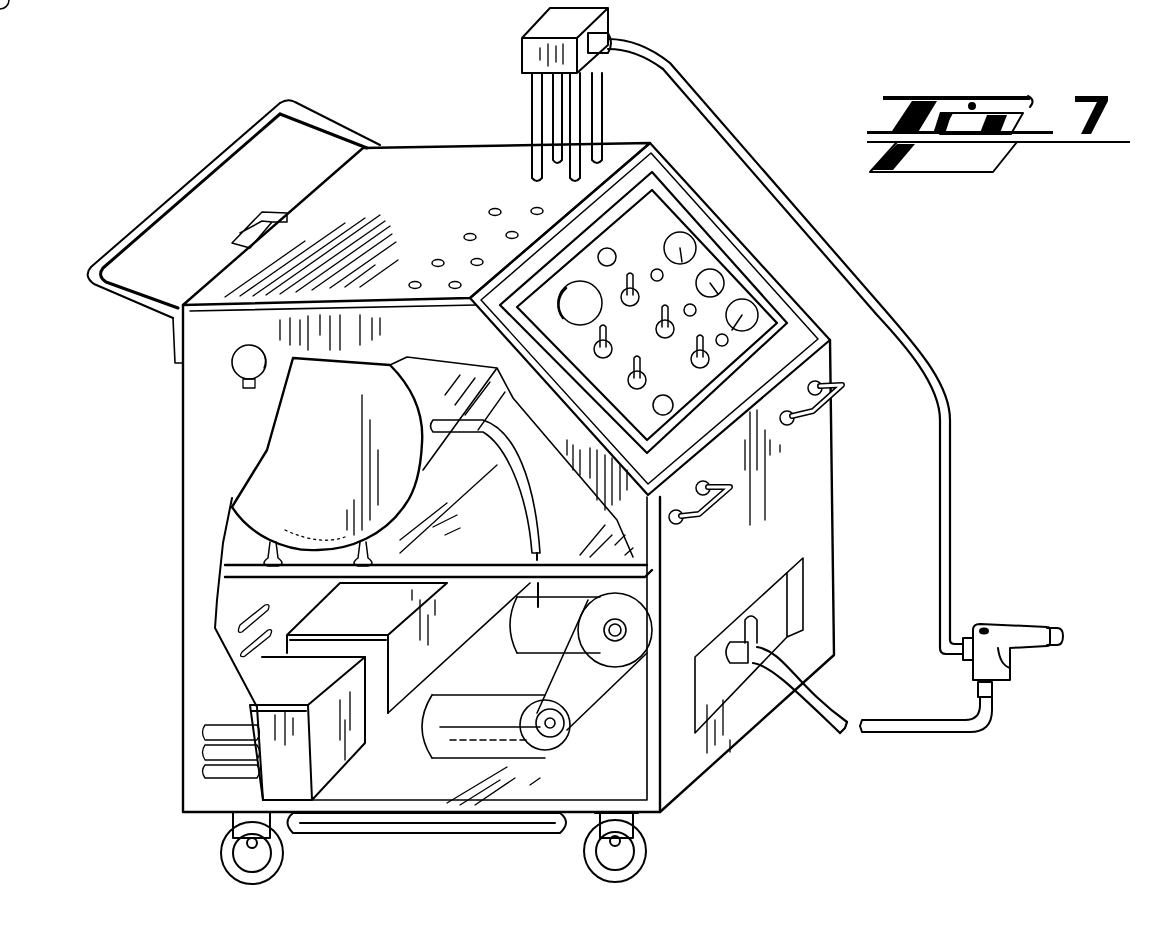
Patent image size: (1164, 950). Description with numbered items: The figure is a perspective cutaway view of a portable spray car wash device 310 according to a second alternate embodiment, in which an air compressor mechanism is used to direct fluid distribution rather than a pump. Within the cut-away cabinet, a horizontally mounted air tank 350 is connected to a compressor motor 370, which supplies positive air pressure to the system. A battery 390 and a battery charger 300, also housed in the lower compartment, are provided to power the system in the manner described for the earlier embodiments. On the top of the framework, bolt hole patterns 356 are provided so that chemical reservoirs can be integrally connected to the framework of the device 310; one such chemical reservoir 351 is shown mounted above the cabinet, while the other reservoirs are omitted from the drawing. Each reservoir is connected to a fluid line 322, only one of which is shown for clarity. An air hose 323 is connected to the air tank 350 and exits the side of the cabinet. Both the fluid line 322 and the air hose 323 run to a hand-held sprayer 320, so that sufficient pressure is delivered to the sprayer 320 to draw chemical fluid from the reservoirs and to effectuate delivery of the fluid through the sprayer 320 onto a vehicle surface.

The device 310 is at (993, 212).
The sprayer 320 is at (1013, 617).
The fluid line 322 is at (947, 407).
The air hose 323 is at (807, 712).
The air tank 350 is at (325, 460).
The chemical reservoir 351 is at (522, 58).
The bolt hole patterns 356 is at (533, 182).
The battery charger 300 is at (385, 617).
The battery 390 is at (295, 688).
The compressor motor 370 is at (458, 725).